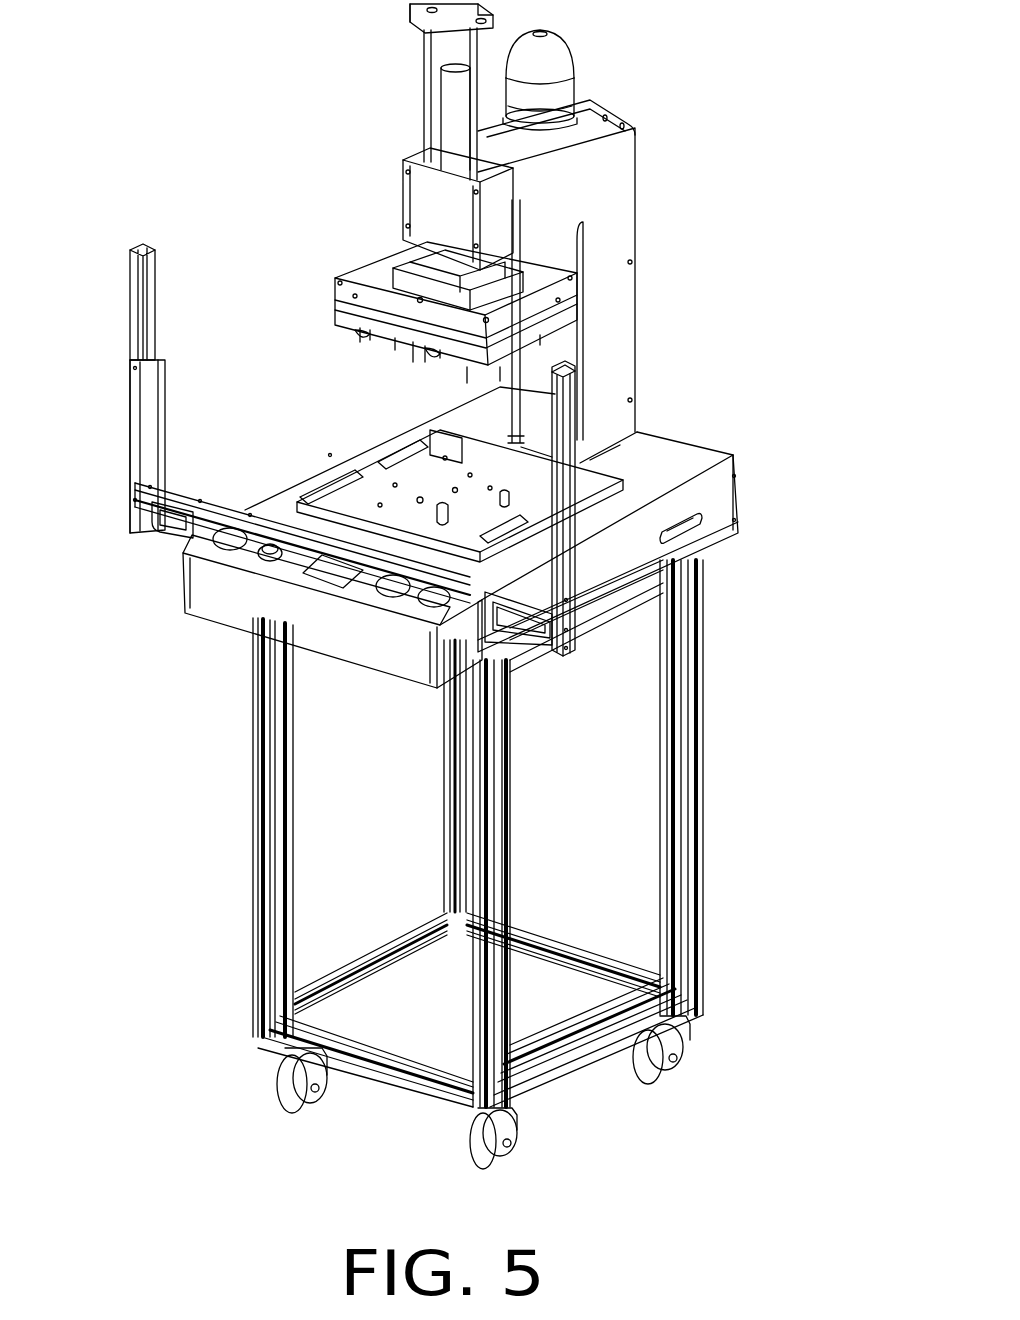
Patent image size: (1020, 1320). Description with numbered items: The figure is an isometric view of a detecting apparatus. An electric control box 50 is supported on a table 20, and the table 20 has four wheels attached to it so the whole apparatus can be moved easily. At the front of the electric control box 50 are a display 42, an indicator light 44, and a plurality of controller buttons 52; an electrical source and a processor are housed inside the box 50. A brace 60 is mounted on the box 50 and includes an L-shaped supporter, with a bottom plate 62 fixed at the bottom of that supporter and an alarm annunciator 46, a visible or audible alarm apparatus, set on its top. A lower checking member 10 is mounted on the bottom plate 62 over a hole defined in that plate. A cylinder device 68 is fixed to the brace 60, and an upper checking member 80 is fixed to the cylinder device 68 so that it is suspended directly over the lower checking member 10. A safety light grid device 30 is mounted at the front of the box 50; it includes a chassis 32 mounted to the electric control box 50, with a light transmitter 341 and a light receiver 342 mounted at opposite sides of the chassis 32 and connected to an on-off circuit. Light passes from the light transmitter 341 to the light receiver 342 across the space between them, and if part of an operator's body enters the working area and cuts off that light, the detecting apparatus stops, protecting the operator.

The lower checking member 10 is at (348, 472).
The table 20 is at (705, 882).
The safety light grid device 30 is at (128, 455).
The chassis 32 is at (157, 512).
The light transmitter 341 is at (130, 283).
The light receiver 342 is at (584, 392).
The display 42 is at (330, 575).
The indicator light 44 is at (268, 562).
The alarm annunciator 46 is at (553, 43).
The electric control box 50 is at (659, 530).
The controller buttons 52 is at (432, 608).
The brace 60 is at (645, 302).
The bottom plate 62 is at (668, 468).
The cylinder device 68 is at (407, 172).
The upper checking member 80 is at (370, 255).